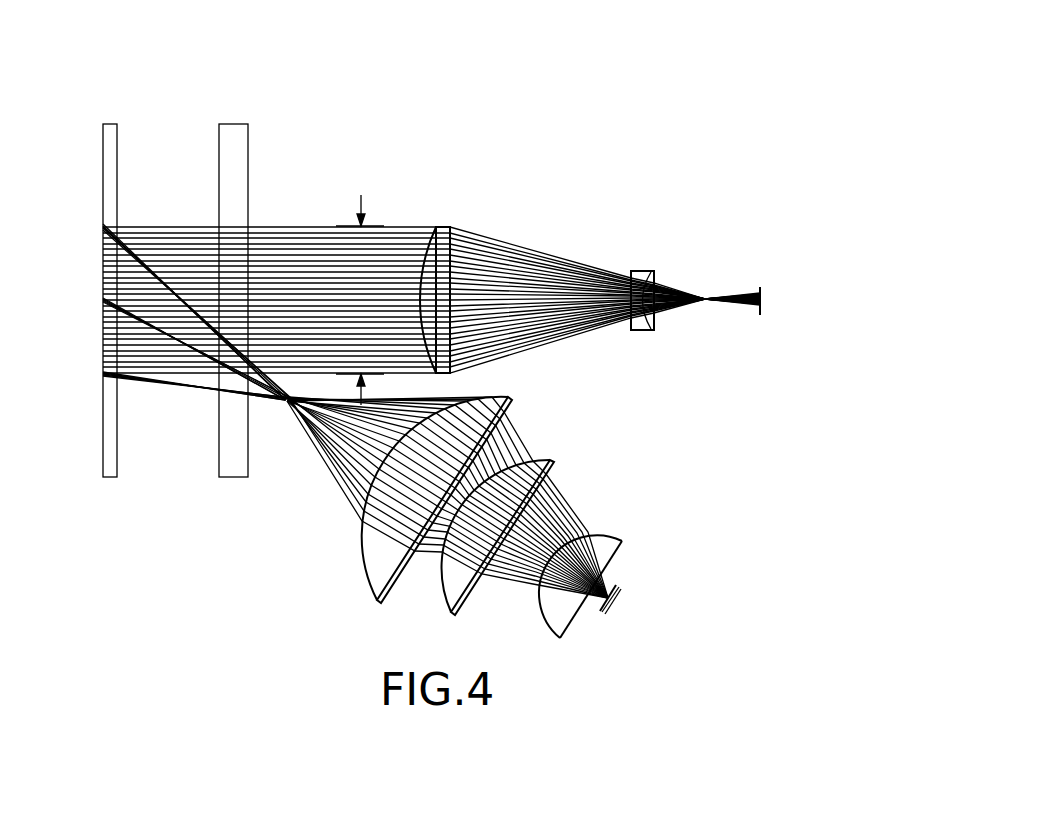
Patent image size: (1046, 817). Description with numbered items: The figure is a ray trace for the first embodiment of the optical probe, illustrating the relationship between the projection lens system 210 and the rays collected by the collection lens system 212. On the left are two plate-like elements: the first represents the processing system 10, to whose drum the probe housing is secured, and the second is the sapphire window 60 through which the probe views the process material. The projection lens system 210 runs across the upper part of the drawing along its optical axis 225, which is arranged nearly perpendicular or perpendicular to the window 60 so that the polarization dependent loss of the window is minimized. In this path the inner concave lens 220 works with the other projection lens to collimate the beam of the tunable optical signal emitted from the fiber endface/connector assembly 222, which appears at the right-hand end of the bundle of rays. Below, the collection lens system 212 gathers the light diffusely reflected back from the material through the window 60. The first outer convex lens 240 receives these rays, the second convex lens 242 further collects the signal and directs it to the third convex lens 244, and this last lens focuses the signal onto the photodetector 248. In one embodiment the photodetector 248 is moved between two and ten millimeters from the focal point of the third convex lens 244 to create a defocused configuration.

The processing system 10 is at (113, 123).
The sapphire window 60 is at (248, 145).
The projection lens system unit 210 is at (566, 145).
The collection lens system 212 is at (270, 510).
The optical axis 225 is at (445, 230).
The inner concave lens 220 is at (642, 271).
The fiber endface/connector assembly 222 is at (763, 289).
The first outer convex lens 240 is at (498, 425).
The second convex lens 242 is at (554, 470).
The third convex lens 244 is at (620, 541).
The photodetector 248 is at (620, 594).